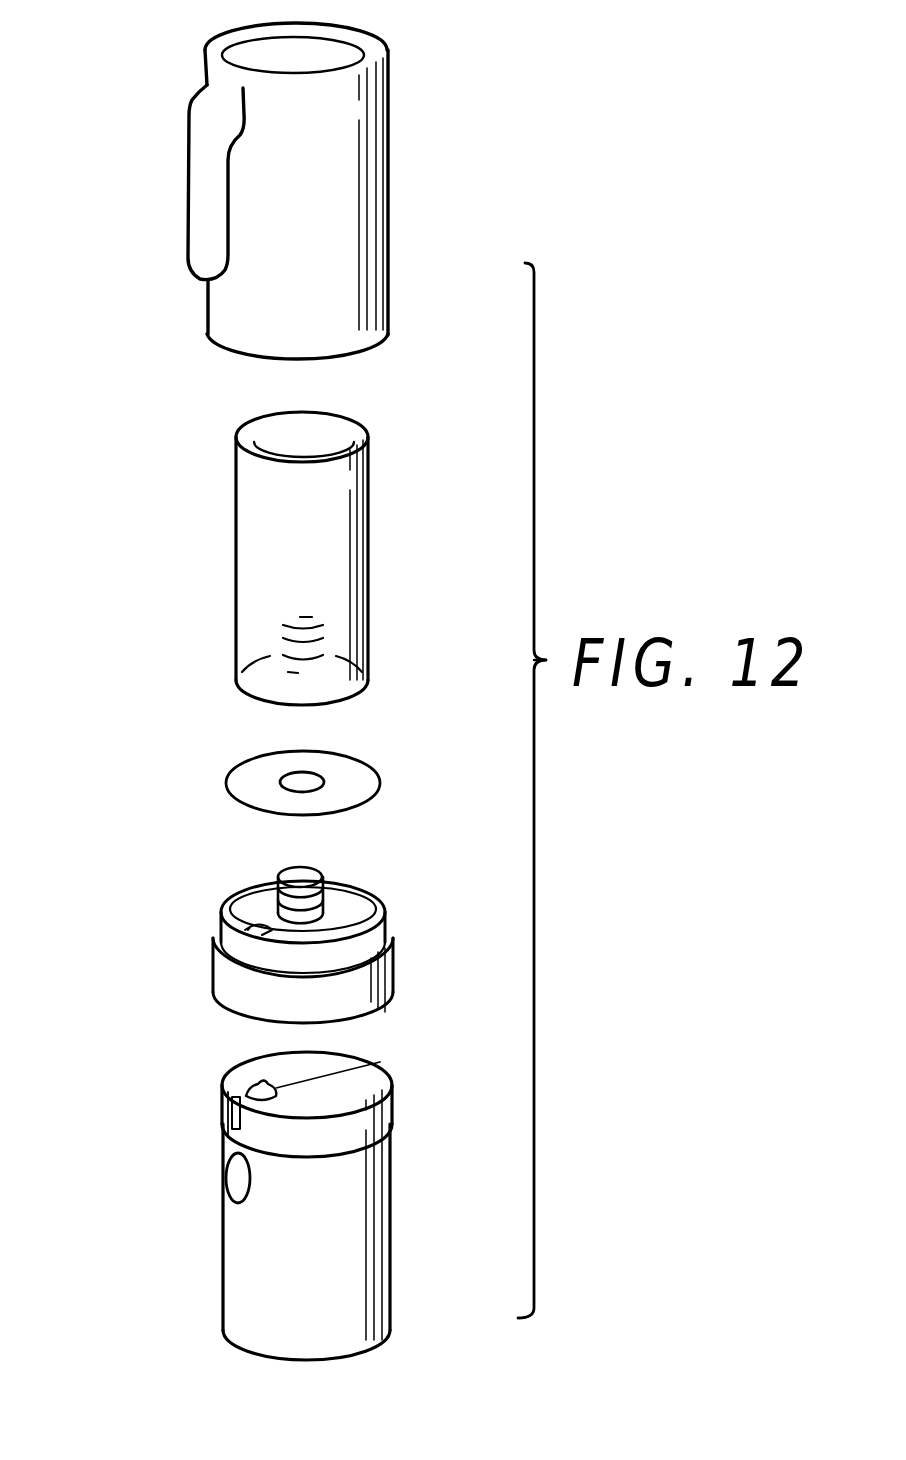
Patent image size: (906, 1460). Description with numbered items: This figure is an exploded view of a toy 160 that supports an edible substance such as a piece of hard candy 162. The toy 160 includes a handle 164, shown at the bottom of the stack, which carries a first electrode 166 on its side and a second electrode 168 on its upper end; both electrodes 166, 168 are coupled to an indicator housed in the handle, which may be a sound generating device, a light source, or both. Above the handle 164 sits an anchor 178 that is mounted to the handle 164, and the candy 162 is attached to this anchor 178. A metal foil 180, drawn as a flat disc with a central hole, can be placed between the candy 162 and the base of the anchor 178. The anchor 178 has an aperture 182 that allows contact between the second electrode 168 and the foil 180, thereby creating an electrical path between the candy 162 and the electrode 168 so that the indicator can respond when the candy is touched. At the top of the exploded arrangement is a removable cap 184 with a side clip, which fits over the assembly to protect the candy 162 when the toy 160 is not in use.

The toy 160 is at (570, 530).
The removable cap 184 is at (240, 212).
The hard candy 162 is at (253, 556).
The metal foil 180 is at (240, 780).
The anchor 178 is at (394, 974).
The aperture 182 is at (243, 922).
The handle 164 is at (360, 1222).
The second electrode 168 is at (250, 1085).
The first electrode 166 is at (237, 1180).